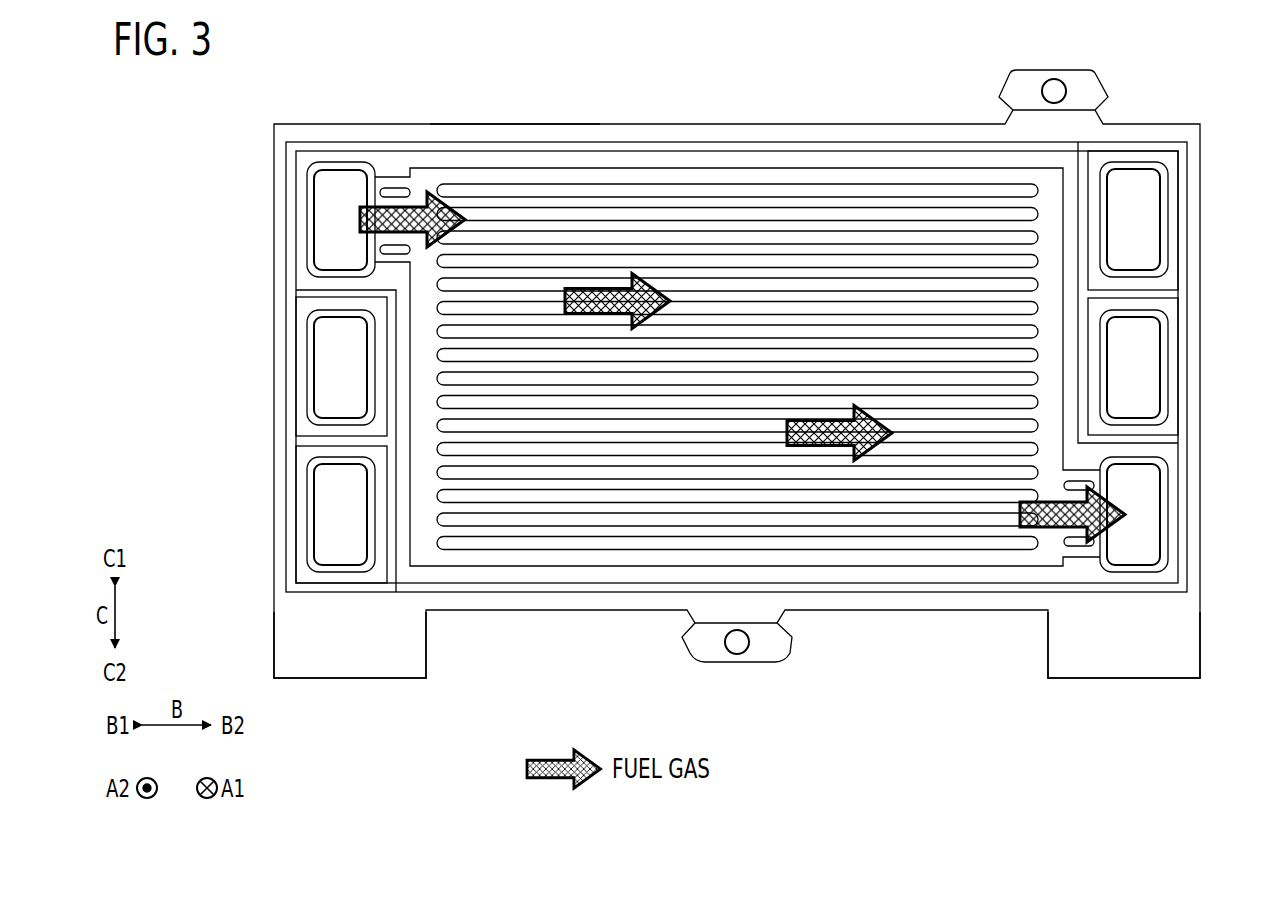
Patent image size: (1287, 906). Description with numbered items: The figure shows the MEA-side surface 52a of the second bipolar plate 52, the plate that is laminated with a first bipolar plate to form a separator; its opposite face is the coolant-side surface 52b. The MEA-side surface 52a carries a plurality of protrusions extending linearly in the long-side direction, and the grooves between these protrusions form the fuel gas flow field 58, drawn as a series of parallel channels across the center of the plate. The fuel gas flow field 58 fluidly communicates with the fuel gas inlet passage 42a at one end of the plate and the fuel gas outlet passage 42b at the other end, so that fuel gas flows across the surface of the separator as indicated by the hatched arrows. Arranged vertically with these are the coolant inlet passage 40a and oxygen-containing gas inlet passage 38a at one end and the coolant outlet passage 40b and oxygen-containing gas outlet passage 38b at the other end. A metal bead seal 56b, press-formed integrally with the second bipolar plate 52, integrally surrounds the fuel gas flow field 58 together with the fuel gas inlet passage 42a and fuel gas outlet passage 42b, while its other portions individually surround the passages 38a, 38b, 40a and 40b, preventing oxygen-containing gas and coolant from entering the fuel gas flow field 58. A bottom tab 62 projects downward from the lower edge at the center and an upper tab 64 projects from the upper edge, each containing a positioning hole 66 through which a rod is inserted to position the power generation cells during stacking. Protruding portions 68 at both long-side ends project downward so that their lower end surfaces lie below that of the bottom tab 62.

The second bipolar plate 52 is at (298, 53).
The MEA-side surface 52a is at (515, 132).
The coolant-side surface 52b is at (589, 133).
The metal bead seal 56b is at (732, 143).
The fuel gas flow field 58 is at (568, 516).
The fuel gas inlet passage 42a is at (330, 203).
The fuel gas outlet passage 42b is at (1145, 505).
The coolant inlet passage 40a is at (1143, 357).
The coolant outlet passage 40b is at (330, 355).
The oxygen-containing gas inlet passage 38a is at (1143, 203).
The oxygen-containing gas outlet passage 38b is at (330, 504).
The bottom tab 62 is at (707, 652).
The upper tab 64 is at (1095, 83).
The positioning hole 66 is at (1054, 79).
The protruding portion 68 is at (357, 665).